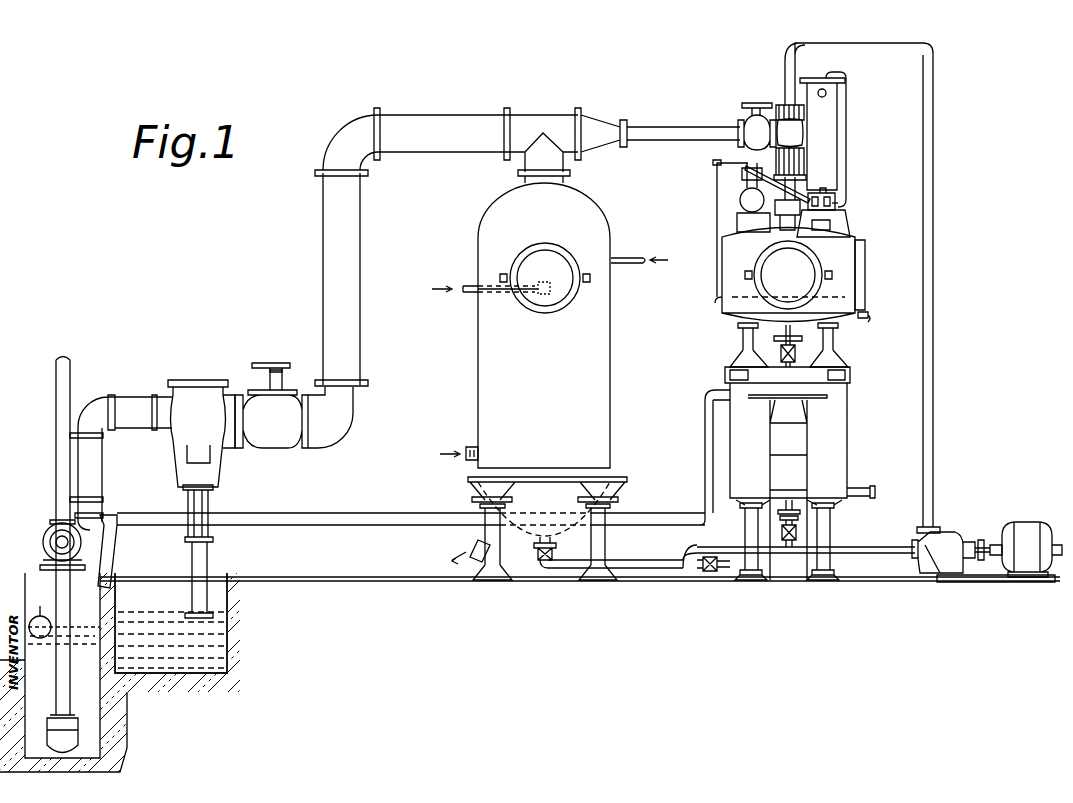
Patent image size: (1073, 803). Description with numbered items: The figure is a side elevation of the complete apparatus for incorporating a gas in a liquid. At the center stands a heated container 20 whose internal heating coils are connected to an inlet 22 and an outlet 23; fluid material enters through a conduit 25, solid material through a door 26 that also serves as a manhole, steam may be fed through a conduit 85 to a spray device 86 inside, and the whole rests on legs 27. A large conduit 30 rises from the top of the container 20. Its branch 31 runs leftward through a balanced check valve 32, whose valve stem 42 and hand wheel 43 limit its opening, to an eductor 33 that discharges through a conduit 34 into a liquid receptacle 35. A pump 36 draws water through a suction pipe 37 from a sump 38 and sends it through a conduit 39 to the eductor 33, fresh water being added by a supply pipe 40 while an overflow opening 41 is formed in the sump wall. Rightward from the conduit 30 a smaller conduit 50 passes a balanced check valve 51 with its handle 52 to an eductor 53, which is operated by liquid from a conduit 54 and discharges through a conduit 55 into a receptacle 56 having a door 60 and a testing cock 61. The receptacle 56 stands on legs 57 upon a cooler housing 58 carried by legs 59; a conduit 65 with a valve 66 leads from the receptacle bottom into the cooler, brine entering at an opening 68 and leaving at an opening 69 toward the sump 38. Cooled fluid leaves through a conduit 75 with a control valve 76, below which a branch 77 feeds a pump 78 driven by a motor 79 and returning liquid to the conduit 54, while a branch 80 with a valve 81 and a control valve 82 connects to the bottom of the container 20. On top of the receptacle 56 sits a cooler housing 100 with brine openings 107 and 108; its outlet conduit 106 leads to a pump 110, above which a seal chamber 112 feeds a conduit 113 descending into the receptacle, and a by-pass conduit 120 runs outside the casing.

The container 20 is at (612, 404).
The inlet 22 is at (470, 446).
The outlet 23 is at (478, 545).
The conduit 25 is at (628, 255).
The door 26 is at (558, 305).
The legs 27 is at (500, 560).
The conduit 30 is at (518, 181).
The branch 31 is at (433, 140).
The balanced check valve 32 is at (280, 440).
The eductor 33 is at (180, 435).
The conduit 34 is at (210, 562).
The liquid receptacle 35 is at (150, 585).
The pump 36 is at (44, 530).
The suction pipe 37 is at (70, 612).
The sump 38 is at (47, 708).
The conduit 39 is at (133, 398).
The supply pipe 40 is at (58, 393).
The overflow opening 41 is at (64, 611).
The valve stem 42 is at (290, 370).
The hand wheel 43 is at (262, 364).
The conduit 50 is at (671, 132).
The balanced check valve 51 is at (748, 125).
The handle 52 is at (760, 98).
The eductor 53 is at (800, 135).
The conduit 54 is at (935, 195).
The conduit 55 is at (815, 192).
The receptacle 56 is at (730, 258).
The legs 57 is at (742, 345).
The cooler housing 58 is at (848, 418).
The legs 59 is at (832, 530).
The door 60 is at (822, 265).
The testing cock 61 is at (868, 310).
The conduit 65 is at (797, 352).
The valve 66 is at (774, 339).
The opening 68 is at (858, 486).
The opening 69 is at (705, 398).
The conduit 75 is at (802, 516).
The control valve 76 is at (780, 533).
The branch 77 is at (886, 575).
The pump 78 is at (945, 535).
The motor 79 is at (1025, 528).
The branch 80 is at (648, 572).
The valve 81 is at (708, 575).
The control valve 82 is at (545, 565).
The conduit 85 is at (468, 294).
The spray device 86 is at (548, 284).
The cooler housing 100 is at (825, 150).
The outlet conduit 106 is at (782, 222).
The opening 107 is at (826, 190).
The opening 108 is at (828, 92).
The pump 110 is at (740, 202).
The chamber 112 is at (717, 172).
The conduit 113 is at (737, 225).
The by-pass conduit 120 is at (846, 198).